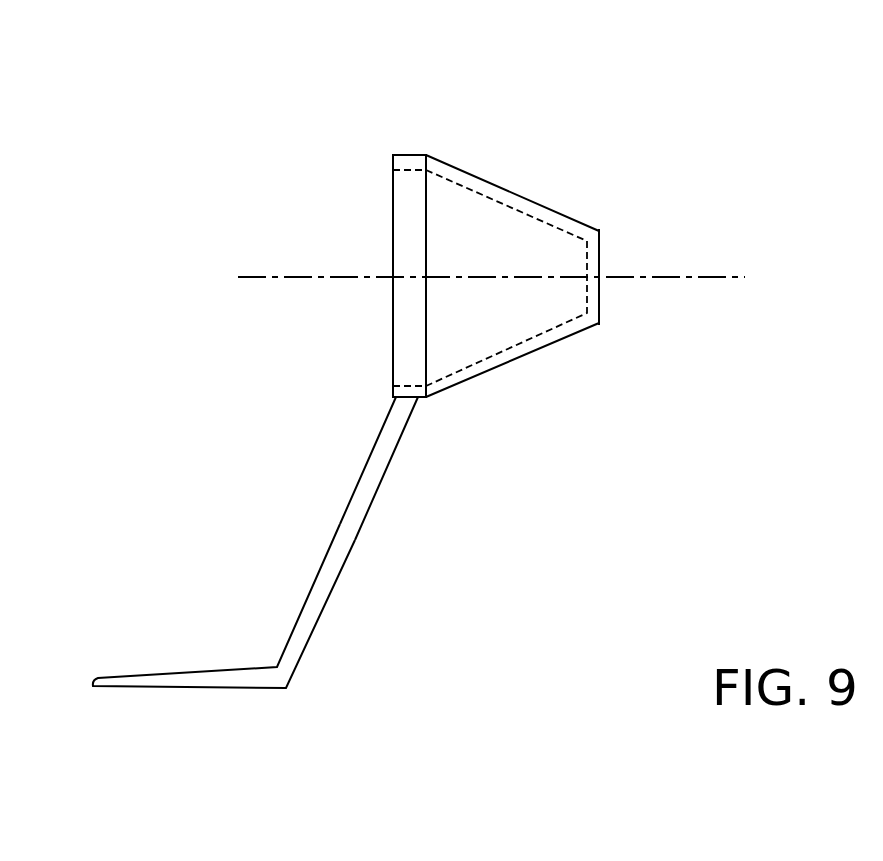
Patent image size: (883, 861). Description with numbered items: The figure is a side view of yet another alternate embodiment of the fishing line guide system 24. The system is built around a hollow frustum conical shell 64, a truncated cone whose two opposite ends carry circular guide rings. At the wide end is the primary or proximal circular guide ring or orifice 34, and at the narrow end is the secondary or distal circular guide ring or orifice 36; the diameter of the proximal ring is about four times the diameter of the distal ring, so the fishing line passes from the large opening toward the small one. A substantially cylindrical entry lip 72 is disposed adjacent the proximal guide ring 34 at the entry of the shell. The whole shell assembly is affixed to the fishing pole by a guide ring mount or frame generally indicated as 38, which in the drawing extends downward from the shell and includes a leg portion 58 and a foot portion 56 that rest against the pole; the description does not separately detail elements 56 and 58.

The fishing line guide system 24 is at (414, 357).
The primary or proximal circular guide ring or orifice 34 is at (387, 242).
The secondary or distal circular guide ring or orifice 36 is at (597, 265).
The guide ring mount or frame 38 is at (343, 534).
The bracket foot 56 is at (313, 587).
The bracket leg 58 is at (383, 433).
The hollow frustum conical shell 64 is at (513, 193).
The substantially cylindrical entry lip 72 is at (407, 158).